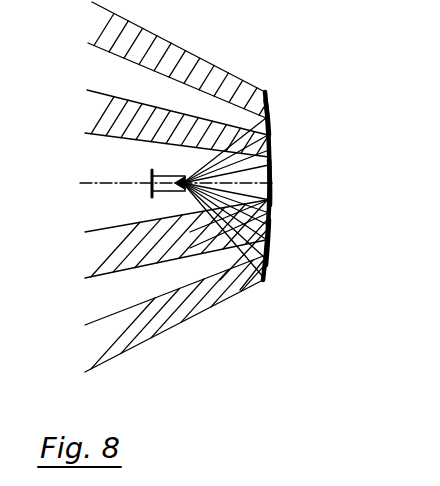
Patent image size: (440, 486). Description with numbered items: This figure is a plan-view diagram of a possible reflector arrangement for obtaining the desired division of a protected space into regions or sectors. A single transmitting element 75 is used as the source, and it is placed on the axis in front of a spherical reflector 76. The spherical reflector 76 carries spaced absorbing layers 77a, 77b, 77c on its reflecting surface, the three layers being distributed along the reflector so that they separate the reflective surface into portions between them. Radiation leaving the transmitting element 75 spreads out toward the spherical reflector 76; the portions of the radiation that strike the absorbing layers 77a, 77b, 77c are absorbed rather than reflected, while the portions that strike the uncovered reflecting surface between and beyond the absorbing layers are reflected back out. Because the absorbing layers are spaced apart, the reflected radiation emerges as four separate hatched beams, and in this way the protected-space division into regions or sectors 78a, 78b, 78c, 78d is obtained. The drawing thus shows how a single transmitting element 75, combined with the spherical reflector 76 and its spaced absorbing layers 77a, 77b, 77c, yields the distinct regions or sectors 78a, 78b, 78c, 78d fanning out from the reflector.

The transmitting element 75 is at (152, 188).
The spherical reflector 76 is at (268, 103).
The absorbing layer 77a is at (273, 128).
The absorbing layer 77b is at (274, 182).
The absorbing layer 77c is at (272, 240).
The region or sector 78a is at (154, 60).
The region or sector 78b is at (155, 123).
The region or sector 78c is at (153, 239).
The region or sector 78d is at (153, 313).